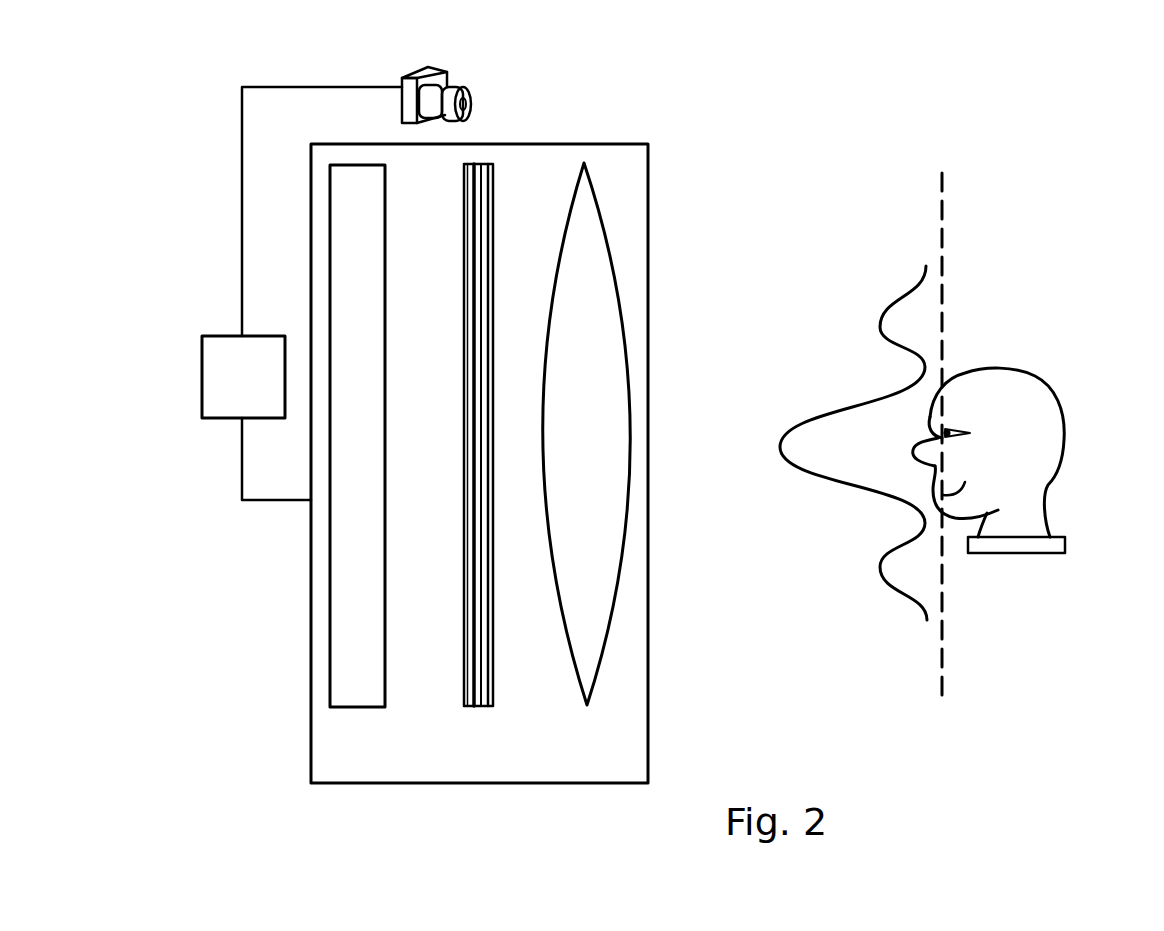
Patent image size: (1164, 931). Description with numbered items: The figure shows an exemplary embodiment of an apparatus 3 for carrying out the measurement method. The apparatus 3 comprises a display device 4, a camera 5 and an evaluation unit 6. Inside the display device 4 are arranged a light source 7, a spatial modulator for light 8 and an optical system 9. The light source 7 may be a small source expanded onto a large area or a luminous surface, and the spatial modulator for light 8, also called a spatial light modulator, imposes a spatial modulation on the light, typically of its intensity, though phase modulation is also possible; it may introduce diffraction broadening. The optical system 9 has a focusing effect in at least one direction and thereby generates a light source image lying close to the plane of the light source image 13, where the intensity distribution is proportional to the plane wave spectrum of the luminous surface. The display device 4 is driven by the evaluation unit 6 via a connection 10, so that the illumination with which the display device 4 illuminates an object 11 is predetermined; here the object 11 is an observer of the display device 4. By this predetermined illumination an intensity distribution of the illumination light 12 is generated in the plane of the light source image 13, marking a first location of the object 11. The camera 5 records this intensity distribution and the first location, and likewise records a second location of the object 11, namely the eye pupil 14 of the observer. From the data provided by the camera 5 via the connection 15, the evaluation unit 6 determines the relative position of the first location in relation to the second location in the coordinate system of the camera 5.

The apparatus 3 is at (714, 113).
The display device 4 is at (311, 757).
The camera 5 is at (406, 94).
The evaluation unit 6 is at (251, 395).
The light source 7 is at (342, 662).
The spatial modulator for light 8 is at (482, 662).
The optical system 9 is at (589, 660).
The connection 10 is at (288, 500).
The object 11 is at (1053, 400).
The illumination light 12 is at (904, 275).
The plane of the light source image 13 is at (944, 667).
The eye pupil 14 is at (950, 431).
The connection 15 is at (242, 107).